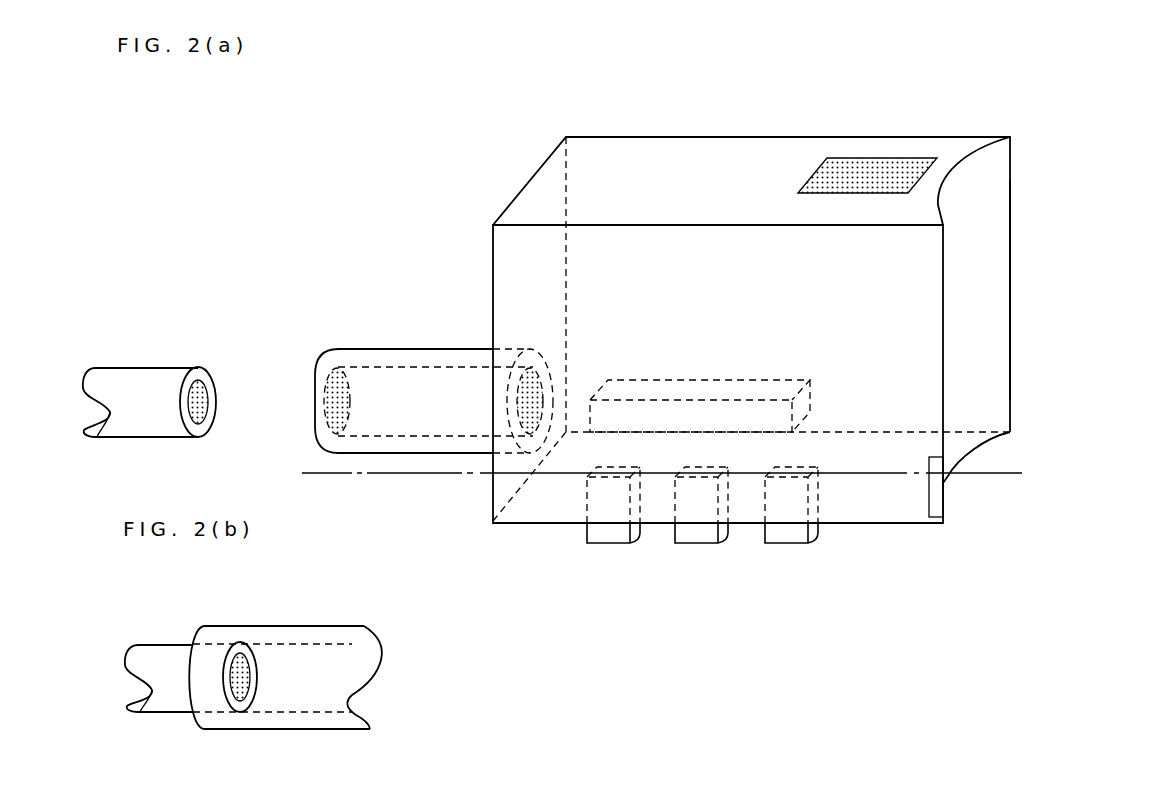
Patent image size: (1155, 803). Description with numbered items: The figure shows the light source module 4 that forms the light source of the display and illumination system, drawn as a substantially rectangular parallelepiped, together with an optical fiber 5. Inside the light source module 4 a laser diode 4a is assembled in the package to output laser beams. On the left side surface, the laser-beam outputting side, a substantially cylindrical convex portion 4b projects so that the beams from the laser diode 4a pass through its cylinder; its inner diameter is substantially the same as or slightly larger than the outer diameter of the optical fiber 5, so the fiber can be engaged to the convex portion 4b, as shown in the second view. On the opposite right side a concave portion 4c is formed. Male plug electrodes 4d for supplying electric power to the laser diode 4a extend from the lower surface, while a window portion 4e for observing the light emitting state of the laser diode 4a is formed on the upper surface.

In FIG. 2A, the light source module 4 is at (1128, 91).
In FIG. 2A, the laser diode 4a is at (803, 407).
In FIG. 2A, the convex portion 4b is at (400, 378).
In FIG. 2B, the convex portion 4b is at (300, 670).
In FIG. 2A, the concave portion 4c is at (981, 310).
In FIG. 2A, the male plug electrodes 4d is at (612, 538).
In FIG. 2A, the window portion 4e is at (885, 175).
In FIG. 2A, the optical fiber 5 is at (137, 388).
In FIG. 2B, the optical fiber 5 is at (180, 665).